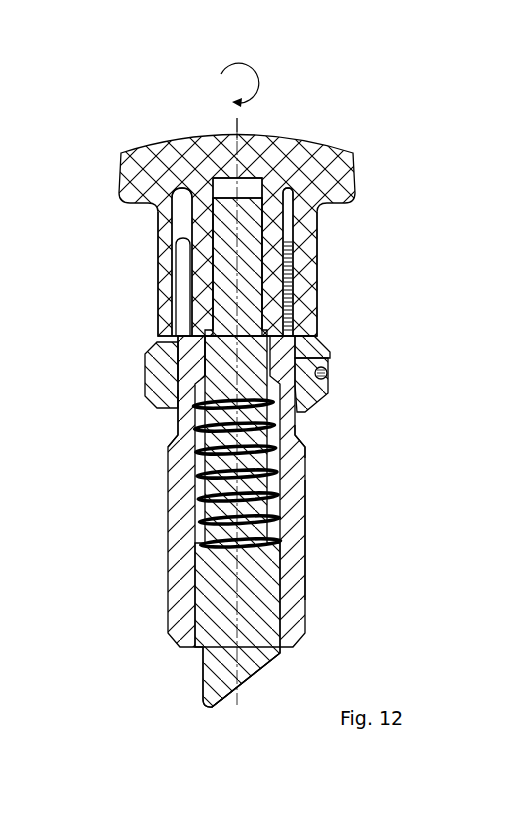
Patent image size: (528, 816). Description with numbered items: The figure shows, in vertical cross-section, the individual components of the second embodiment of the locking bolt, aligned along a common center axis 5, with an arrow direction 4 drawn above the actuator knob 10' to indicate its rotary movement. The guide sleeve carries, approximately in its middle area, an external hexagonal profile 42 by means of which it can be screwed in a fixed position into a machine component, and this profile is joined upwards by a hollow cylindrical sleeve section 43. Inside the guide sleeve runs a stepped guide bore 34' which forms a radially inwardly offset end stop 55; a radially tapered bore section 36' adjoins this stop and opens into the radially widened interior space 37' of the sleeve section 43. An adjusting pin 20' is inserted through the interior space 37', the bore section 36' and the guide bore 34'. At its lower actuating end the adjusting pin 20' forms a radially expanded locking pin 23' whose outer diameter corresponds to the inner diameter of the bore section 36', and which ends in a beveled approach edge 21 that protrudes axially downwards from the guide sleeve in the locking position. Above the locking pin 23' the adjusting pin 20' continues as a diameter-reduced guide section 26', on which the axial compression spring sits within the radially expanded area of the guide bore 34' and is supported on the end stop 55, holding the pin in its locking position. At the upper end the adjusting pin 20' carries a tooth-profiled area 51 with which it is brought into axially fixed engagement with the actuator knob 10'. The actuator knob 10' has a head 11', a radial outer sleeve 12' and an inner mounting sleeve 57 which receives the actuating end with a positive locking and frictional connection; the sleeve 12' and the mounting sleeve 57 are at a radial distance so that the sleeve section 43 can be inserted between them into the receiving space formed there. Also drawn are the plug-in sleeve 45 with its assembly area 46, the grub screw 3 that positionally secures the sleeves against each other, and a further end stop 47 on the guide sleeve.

The arrow direction 4 is at (238, 60).
The center axis 5 is at (235, 124).
The tooth-profiled area 51 is at (247, 218).
The actuator knob 10' is at (321, 368).
The head 11' is at (281, 236).
The mounting sleeve 57 is at (290, 265).
The sleeve section 43 is at (182, 277).
The sleeve 12' is at (275, 274).
The interior space 37' is at (135, 353).
The end stop 47 is at (318, 338).
The bore section 36' is at (355, 374).
The grub screw 3 is at (327, 382).
The external hexagonal profile 42 is at (145, 373).
The end stop 55 is at (182, 400).
The assembly area 46 is at (295, 422).
The guide bore 34' is at (316, 491).
The guide section 26' is at (287, 474).
The plug-in sleeve 45 is at (332, 537).
The locking pin 23' is at (289, 452).
The adjusting pin 20' is at (202, 679).
The beveled approach edge 21 is at (228, 690).